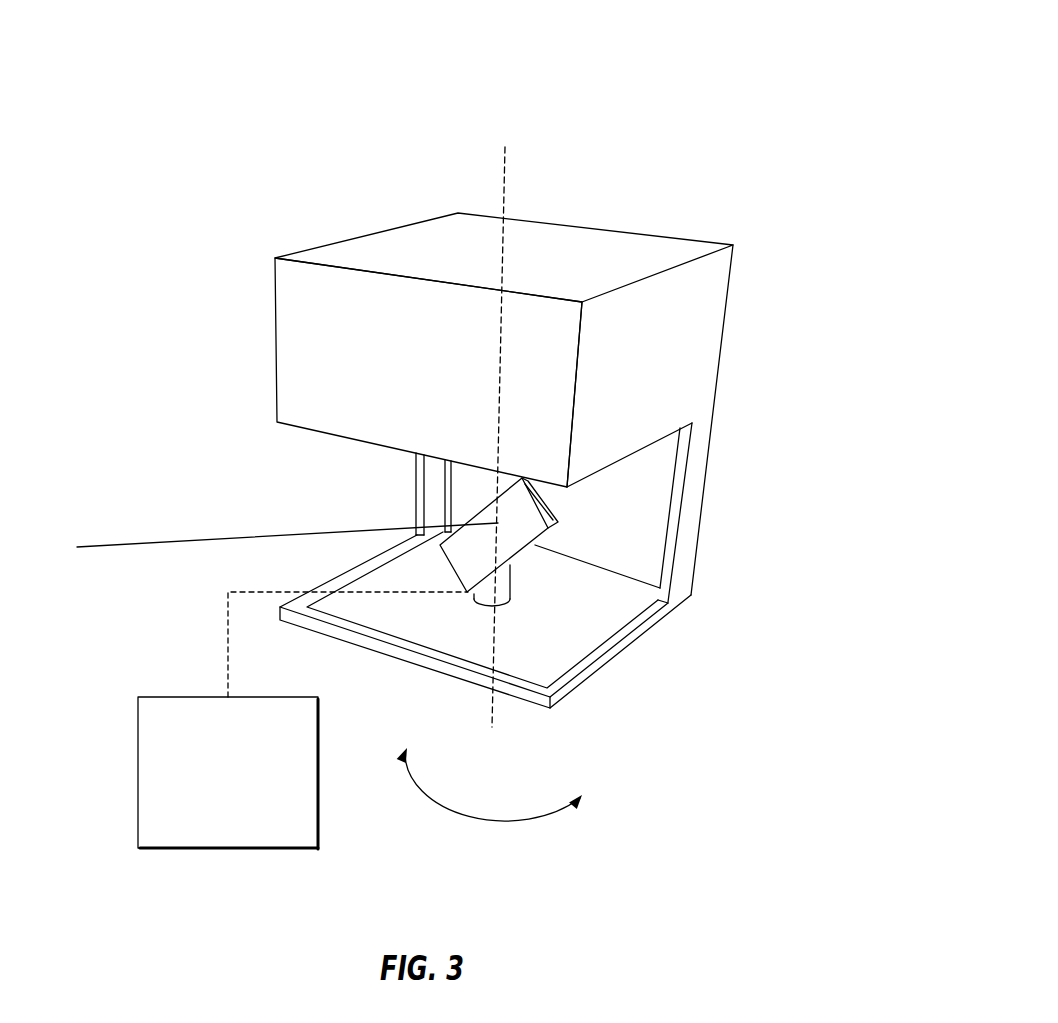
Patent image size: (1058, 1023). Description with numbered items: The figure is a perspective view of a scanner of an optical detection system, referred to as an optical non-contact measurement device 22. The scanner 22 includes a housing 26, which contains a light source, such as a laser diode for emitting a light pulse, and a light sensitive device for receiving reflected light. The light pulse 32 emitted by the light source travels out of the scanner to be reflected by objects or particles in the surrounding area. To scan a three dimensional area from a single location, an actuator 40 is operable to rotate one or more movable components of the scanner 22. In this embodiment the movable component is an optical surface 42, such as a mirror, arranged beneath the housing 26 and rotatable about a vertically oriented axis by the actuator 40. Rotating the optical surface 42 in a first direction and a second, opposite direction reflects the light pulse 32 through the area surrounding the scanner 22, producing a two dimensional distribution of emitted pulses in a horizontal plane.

The optical non-contact measurement device 22 is at (731, 110).
The housing 26 is at (725, 353).
The light pulse 32 is at (138, 542).
The actuator 40 is at (210, 850).
The optical surface 42 is at (518, 525).